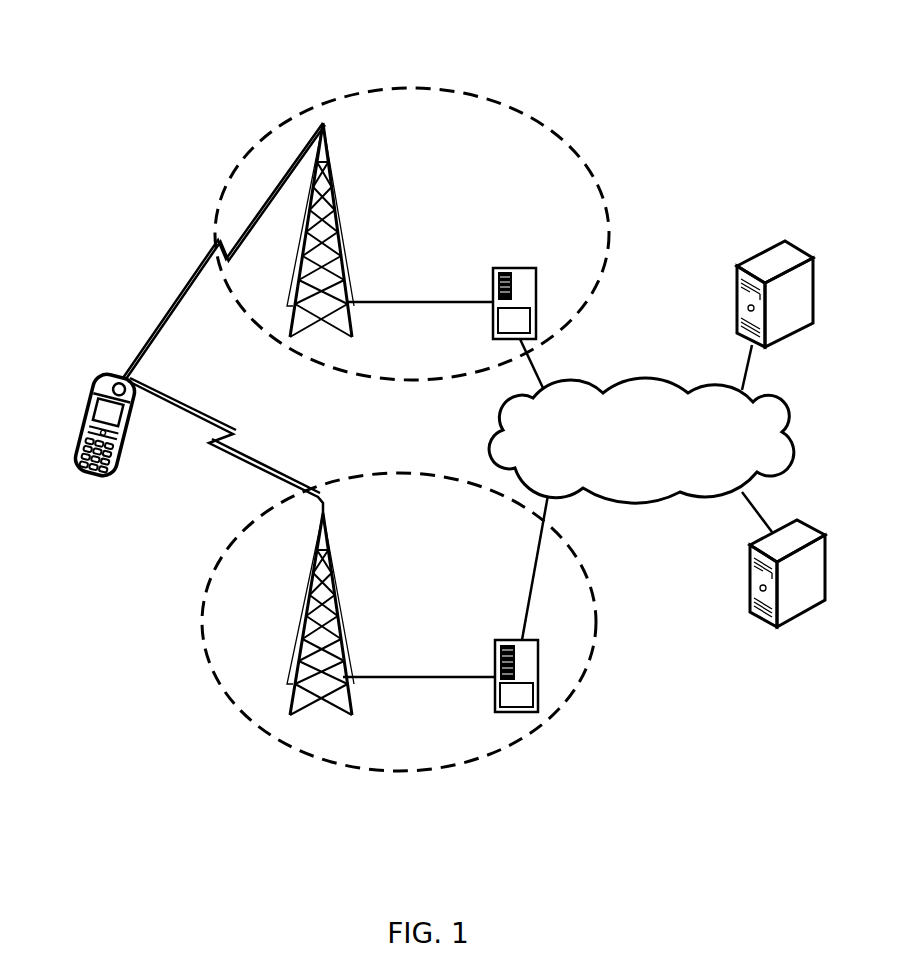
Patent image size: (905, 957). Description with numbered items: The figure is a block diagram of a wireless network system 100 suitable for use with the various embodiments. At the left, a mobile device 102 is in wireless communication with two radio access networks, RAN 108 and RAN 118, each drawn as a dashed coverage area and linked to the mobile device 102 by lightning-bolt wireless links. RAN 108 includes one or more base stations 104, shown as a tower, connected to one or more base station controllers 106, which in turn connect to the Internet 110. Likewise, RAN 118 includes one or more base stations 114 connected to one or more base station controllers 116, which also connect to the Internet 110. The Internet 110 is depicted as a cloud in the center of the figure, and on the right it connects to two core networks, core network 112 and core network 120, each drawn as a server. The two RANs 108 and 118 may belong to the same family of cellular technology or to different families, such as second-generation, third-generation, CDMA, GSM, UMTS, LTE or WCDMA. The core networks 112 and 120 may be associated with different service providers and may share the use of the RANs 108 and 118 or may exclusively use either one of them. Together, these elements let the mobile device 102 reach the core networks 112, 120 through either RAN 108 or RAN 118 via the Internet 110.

The wireless network system 100 is at (152, 96).
The mobile device 102 is at (97, 385).
The base station 104 is at (335, 237).
The base station controller 106 is at (493, 330).
The radio access network 108 is at (378, 92).
The Internet 110 is at (643, 377).
The core network 112 is at (770, 245).
The base station 114 is at (337, 605).
The base station controller 116 is at (495, 705).
The radio access network 118 is at (383, 772).
The core network 120 is at (750, 582).